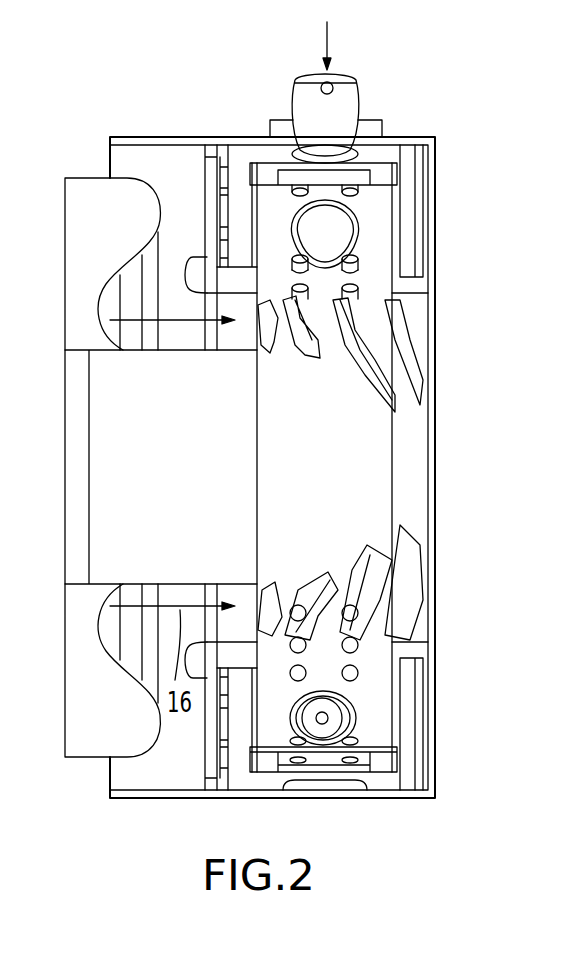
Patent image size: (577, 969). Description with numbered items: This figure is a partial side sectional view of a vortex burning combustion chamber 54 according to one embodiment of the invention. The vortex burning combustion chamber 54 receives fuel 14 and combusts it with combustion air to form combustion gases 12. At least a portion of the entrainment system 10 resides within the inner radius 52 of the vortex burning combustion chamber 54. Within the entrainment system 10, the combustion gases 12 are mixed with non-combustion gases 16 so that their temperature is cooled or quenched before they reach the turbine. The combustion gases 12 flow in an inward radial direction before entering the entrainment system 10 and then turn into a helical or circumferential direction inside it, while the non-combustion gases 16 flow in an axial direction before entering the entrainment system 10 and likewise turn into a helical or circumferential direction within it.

The entrainment system 10 is at (340, 461).
The combustion gases 12 is at (300, 700).
The fuel 14 is at (325, 40).
The non-combustion gases 16 is at (167, 315).
The inner radius 52 is at (320, 307).
The vortex burning combustion chamber 54 is at (370, 210).